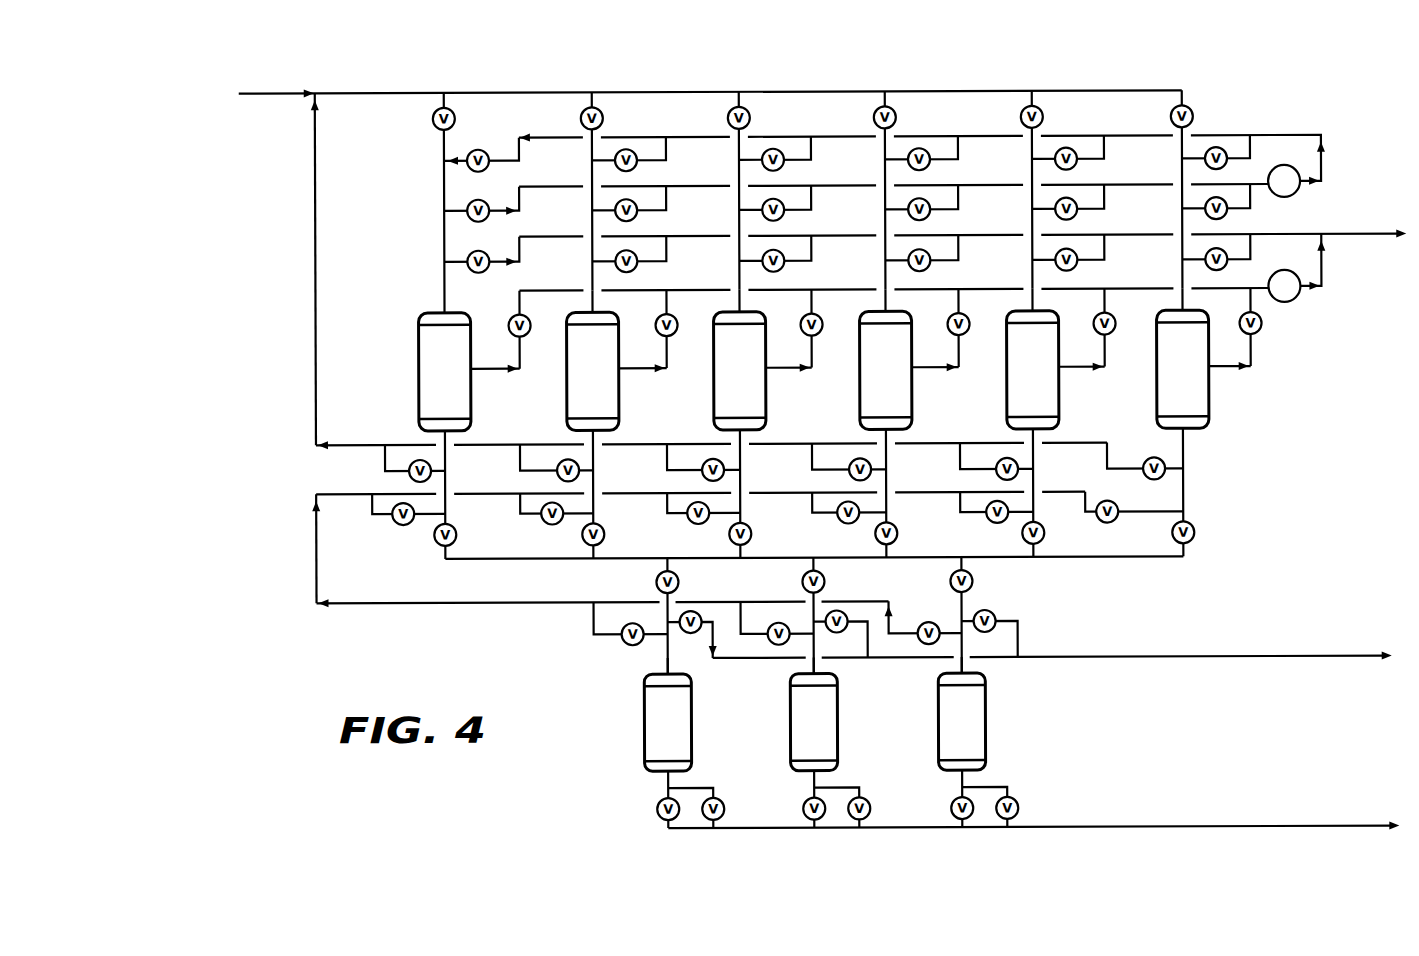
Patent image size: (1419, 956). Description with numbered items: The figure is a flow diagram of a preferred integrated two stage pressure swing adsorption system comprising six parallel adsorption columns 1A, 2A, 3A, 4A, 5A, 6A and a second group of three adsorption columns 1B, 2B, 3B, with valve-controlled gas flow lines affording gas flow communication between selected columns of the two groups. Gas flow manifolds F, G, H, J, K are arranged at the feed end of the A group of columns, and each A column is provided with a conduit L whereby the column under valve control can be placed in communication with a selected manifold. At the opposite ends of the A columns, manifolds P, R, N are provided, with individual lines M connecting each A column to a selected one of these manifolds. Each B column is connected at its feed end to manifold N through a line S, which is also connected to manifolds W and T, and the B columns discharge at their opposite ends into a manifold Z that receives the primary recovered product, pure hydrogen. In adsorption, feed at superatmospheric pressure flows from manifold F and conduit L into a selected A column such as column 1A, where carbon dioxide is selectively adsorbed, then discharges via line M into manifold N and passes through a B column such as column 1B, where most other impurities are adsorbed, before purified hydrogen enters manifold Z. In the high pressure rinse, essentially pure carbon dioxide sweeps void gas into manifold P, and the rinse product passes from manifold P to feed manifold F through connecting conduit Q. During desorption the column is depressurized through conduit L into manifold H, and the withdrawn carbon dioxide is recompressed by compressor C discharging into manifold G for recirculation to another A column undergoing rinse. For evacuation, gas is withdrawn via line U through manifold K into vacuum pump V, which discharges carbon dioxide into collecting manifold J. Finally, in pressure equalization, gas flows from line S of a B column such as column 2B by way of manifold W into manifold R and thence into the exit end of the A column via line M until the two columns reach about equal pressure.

The feed manifold F is at (612, 94).
The connecting conduit Q is at (317, 253).
The manifold G is at (1277, 133).
The manifold H is at (709, 186).
The CO2 collecting manifold J is at (1280, 238).
The manifold K is at (677, 291).
The compressor C is at (1277, 168).
The vacuum pump V is at (1294, 272).
The line U is at (517, 360).
The conduit L is at (444, 305).
The adsorption column 1A is at (445, 372).
The adsorption column 2A is at (593, 371).
The adsorption column 3A is at (740, 371).
The adsorption column 4A is at (886, 370).
The adsorption column 5A is at (1033, 370).
The adsorption column 6A is at (1183, 369).
The manifold P is at (657, 443).
The manifold R is at (629, 493).
The line M is at (448, 507).
The manifold N is at (632, 558).
The manifold W is at (557, 600).
The line S is at (666, 663).
The manifold T is at (1055, 658).
The adsorption column 1B is at (667, 722).
The adsorption column 2B is at (813, 722).
The adsorption column 3B is at (961, 721).
The manifold Z is at (1099, 827).